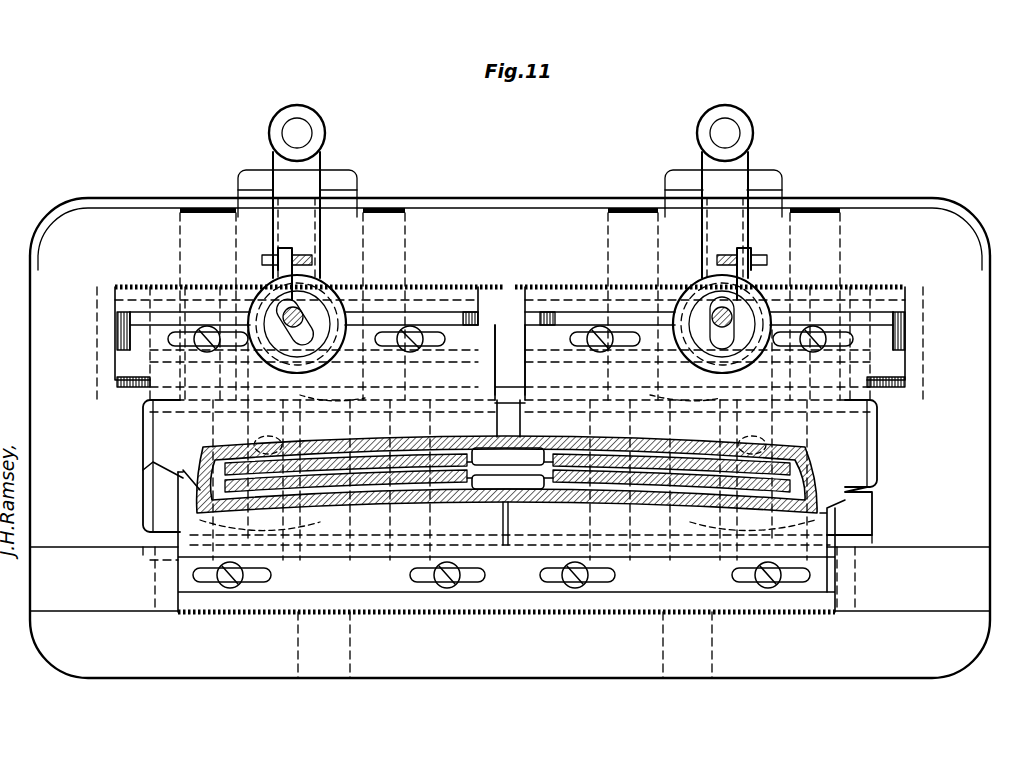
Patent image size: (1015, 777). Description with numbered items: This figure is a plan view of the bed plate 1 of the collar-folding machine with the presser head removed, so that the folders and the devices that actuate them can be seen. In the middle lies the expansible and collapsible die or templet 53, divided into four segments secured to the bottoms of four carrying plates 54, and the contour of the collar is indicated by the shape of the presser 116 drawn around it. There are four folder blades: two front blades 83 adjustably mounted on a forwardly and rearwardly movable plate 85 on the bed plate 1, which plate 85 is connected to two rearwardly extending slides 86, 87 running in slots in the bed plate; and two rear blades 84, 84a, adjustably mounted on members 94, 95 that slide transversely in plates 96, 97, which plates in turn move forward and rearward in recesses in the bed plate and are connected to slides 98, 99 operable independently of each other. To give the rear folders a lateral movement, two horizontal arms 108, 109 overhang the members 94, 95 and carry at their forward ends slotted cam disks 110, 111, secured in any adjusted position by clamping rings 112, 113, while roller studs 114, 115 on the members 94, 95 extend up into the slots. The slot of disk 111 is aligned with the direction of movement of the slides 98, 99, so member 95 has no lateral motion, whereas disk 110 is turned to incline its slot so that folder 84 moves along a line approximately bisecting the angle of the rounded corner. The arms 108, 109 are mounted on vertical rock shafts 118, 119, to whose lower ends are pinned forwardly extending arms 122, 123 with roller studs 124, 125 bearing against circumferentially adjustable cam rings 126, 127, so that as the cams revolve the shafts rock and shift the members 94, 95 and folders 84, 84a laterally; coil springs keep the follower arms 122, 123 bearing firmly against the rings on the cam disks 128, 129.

The bed plate 1 is at (510, 438).
The templet 53 is at (373, 446).
The carrying plates 54 is at (567, 458).
The front blades 83 is at (180, 512).
The rear blade 84 is at (140, 428).
The rear blade 84a is at (858, 450).
The plate 85 is at (442, 600).
The slide 86 is at (326, 675).
The slide 87 is at (695, 675).
The member 94 is at (130, 345).
The member 95 is at (898, 340).
The plate 96 is at (148, 290).
The plate 97 is at (856, 293).
The slide 98 is at (193, 233).
The slide 99 is at (620, 230).
The horizontal arm 108 is at (296, 216).
The horizontal arm 109 is at (725, 216).
The slotted cam disk 110 is at (304, 316).
The slotted cam disk 111 is at (740, 322).
The clamping ring 112 is at (272, 300).
The clamping ring 113 is at (770, 300).
The roller stud 114 is at (312, 333).
The roller stud 115 is at (712, 312).
The presser 116 is at (182, 458).
The vertical rock shaft 118 is at (297, 128).
The vertical rock shaft 119 is at (725, 128).
The forwardly extending arm 122 is at (303, 440).
The forwardly extending arm 123 is at (722, 440).
The roller stud 124 is at (266, 443).
The roller stud 125 is at (758, 448).
The cam ring 126 is at (268, 517).
The cam ring 127 is at (664, 514).
The cam disk 128 is at (180, 548).
The cam disk 129 is at (858, 511).